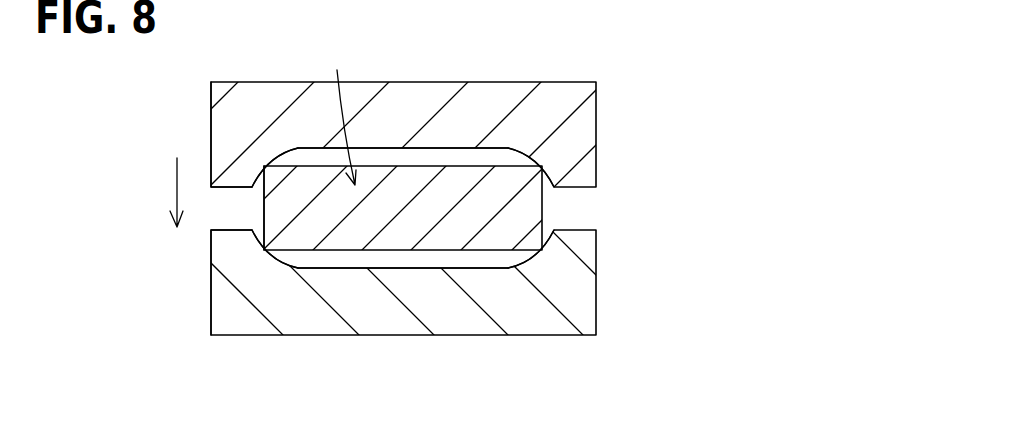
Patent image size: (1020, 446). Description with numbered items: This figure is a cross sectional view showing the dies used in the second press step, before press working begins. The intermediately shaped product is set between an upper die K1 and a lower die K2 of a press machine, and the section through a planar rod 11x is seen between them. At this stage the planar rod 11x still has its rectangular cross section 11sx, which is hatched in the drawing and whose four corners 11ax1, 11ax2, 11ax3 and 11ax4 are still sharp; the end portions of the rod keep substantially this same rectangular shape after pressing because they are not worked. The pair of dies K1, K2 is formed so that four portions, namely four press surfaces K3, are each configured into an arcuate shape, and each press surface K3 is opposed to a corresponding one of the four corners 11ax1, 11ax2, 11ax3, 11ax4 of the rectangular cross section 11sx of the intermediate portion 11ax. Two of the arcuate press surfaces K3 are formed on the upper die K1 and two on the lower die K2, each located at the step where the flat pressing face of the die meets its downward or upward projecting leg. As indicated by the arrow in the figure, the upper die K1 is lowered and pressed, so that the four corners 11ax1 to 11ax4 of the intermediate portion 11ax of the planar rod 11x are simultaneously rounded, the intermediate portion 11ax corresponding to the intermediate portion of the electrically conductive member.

The upper die K1 is at (596, 118).
The lower die K2 is at (596, 257).
The press surface K3 is at (275, 151).
The planar rod 11x is at (338, 115).
The intermediate portion 11ax is at (398, 197).
The corner 11ax1 is at (543, 168).
The corner 11ax2 is at (542, 250).
The corner 11ax3 is at (264, 167).
The corner 11ax4 is at (265, 250).
The rectangular cross section 11sx is at (458, 232).